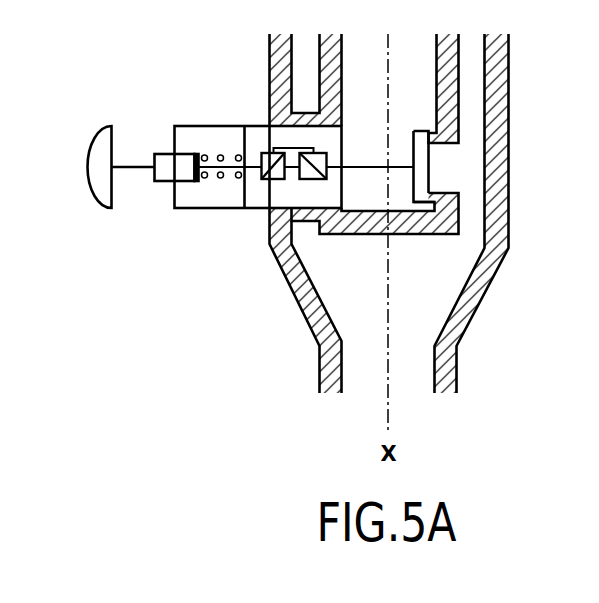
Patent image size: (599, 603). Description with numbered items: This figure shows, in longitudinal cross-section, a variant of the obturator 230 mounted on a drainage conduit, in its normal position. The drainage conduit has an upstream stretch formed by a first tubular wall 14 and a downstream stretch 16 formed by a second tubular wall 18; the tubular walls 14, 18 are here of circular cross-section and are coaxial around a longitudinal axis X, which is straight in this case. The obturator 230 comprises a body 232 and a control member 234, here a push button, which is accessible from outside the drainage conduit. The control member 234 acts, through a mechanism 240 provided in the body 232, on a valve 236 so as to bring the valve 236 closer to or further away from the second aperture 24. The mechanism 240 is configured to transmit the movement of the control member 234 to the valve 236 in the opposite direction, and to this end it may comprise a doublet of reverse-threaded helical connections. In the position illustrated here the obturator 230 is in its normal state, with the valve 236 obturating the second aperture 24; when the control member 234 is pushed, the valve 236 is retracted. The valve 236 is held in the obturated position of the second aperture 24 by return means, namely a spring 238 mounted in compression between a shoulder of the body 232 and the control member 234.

The first tubular wall 14 is at (448, 70).
The downstream stretch 16 is at (406, 376).
The second tubular wall 18 is at (455, 383).
The second aperture 24 is at (460, 162).
The obturator 230 is at (105, 77).
The body 232 is at (213, 209).
The control member 234 is at (95, 195).
The valve 236 is at (422, 131).
The spring 238 is at (221, 152).
The mechanism 240 is at (312, 180).